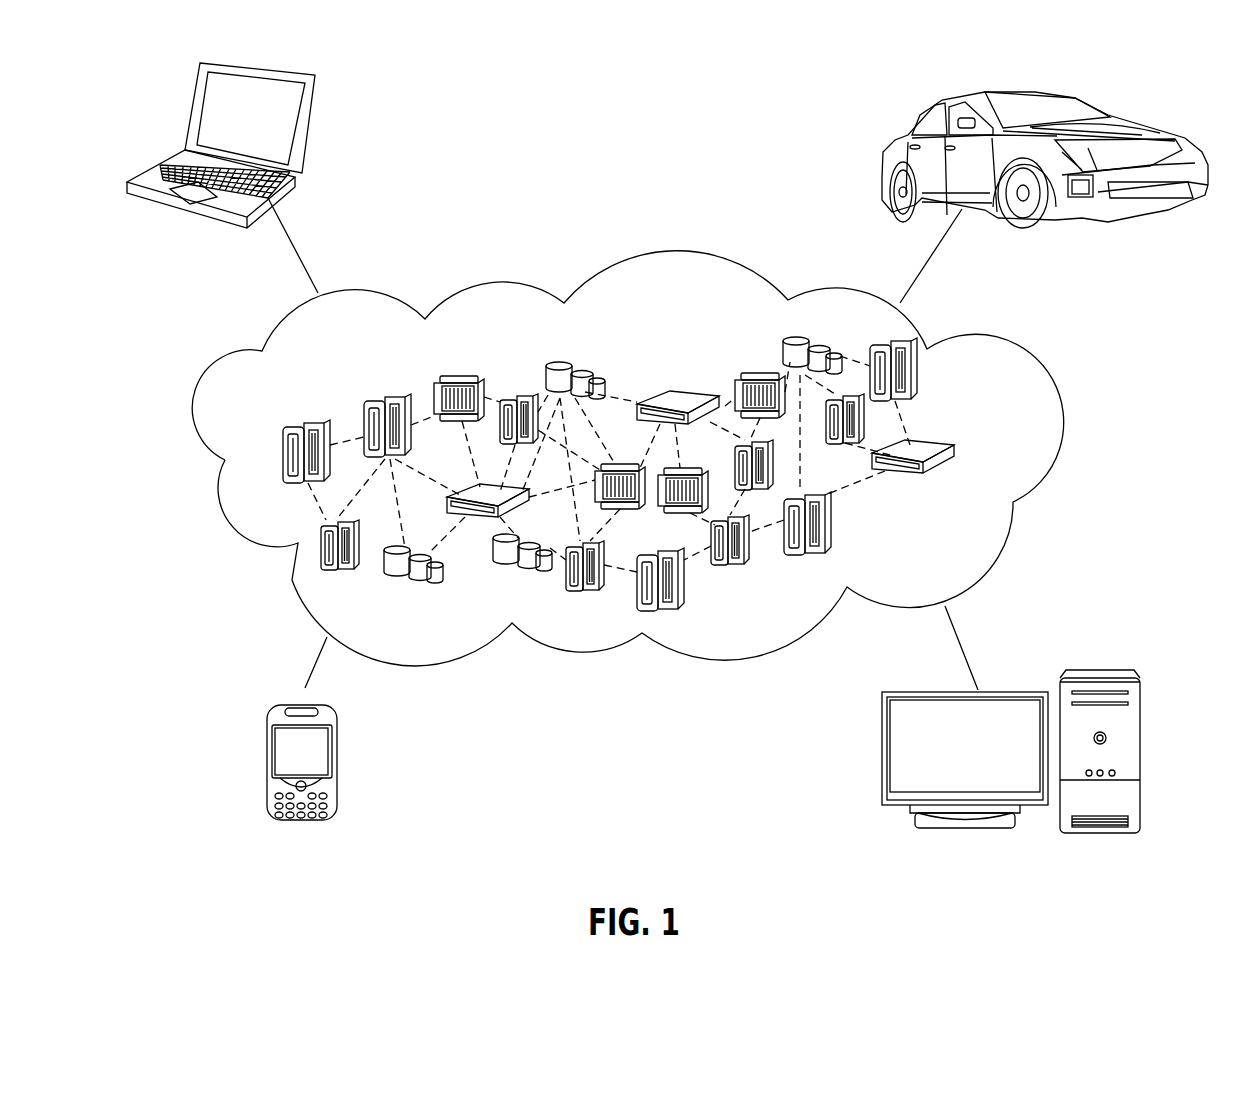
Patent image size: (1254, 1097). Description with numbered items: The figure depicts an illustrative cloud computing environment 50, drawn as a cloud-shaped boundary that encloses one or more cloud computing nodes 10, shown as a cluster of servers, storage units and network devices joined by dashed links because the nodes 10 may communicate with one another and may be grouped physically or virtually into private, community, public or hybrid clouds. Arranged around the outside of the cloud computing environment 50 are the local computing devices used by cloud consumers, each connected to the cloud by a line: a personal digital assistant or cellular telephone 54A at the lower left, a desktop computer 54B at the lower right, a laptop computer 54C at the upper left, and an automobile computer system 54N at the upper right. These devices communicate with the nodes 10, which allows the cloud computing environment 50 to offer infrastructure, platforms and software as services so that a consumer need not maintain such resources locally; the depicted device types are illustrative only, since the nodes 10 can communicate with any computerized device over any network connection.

The cloud computing nodes 10 is at (995, 453).
The cloud computing environment 50 is at (1021, 363).
The personal digital assistant or cellular telephone 54A is at (262, 767).
The desktop computer 54B is at (1107, 666).
The laptop computer 54C is at (306, 131).
The automobile computer system 54N is at (893, 143).